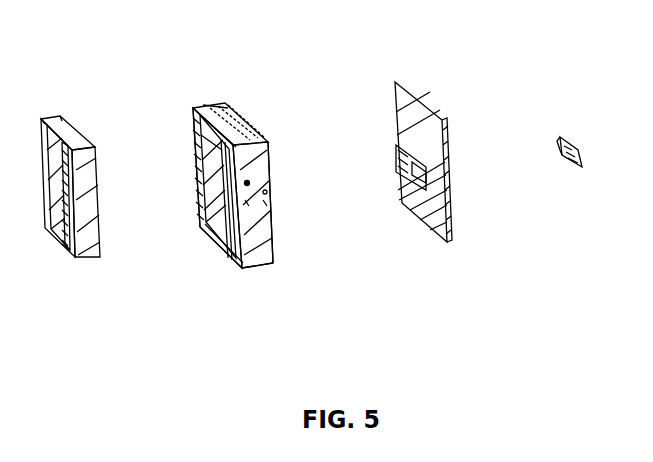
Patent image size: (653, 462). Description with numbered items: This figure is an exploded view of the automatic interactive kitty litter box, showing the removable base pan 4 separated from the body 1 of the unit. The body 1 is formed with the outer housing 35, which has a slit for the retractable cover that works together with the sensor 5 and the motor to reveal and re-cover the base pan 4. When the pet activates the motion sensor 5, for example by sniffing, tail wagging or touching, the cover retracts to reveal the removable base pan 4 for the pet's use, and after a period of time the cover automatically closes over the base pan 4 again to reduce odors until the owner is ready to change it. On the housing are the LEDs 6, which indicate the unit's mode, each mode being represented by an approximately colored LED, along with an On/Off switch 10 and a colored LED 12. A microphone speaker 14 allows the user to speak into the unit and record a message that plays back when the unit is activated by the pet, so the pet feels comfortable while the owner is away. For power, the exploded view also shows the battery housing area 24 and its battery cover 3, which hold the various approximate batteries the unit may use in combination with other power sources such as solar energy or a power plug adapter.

The body 1 is at (240, 183).
The battery cover 3 is at (583, 150).
The removable base pan 4 is at (72, 232).
The sensor 5 is at (195, 170).
The leds 6 is at (199, 226).
The On/Off switch 10 is at (251, 203).
The colored LED 12 is at (266, 194).
The microphone speaker 14 is at (249, 183).
The battery housing area 24 is at (447, 196).
The outter housing 35 is at (258, 268).